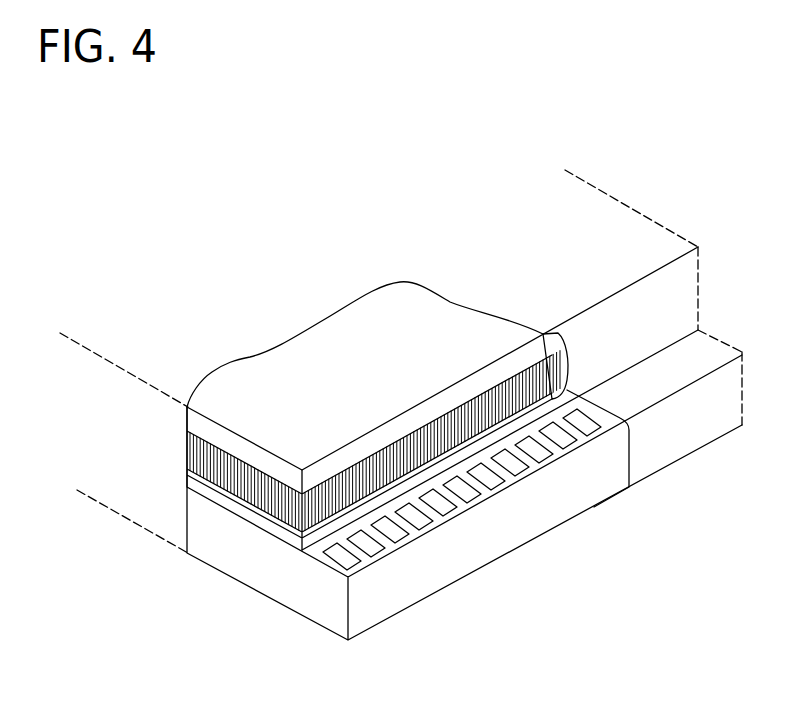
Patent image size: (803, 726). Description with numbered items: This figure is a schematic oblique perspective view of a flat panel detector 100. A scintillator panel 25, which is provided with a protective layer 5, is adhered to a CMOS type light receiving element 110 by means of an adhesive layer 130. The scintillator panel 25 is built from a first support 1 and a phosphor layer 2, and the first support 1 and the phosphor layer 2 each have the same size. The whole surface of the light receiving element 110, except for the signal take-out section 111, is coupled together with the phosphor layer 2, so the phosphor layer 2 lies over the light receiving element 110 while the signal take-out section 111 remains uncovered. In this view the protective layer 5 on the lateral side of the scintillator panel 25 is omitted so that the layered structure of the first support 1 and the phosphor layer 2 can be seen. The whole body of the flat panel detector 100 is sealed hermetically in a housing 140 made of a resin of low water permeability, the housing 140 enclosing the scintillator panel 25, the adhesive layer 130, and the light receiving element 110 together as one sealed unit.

The flat panel detector 100 is at (334, 174).
The housing 140 is at (160, 357).
The scintillator panel 25 is at (577, 262).
The first support 1 is at (447, 324).
The phosphor layer 2 is at (505, 377).
The protective layer 5 is at (544, 377).
The light receiving element 110 is at (278, 577).
The signal take-out section 111 is at (481, 458).
The adhesive layer 130 is at (548, 430).